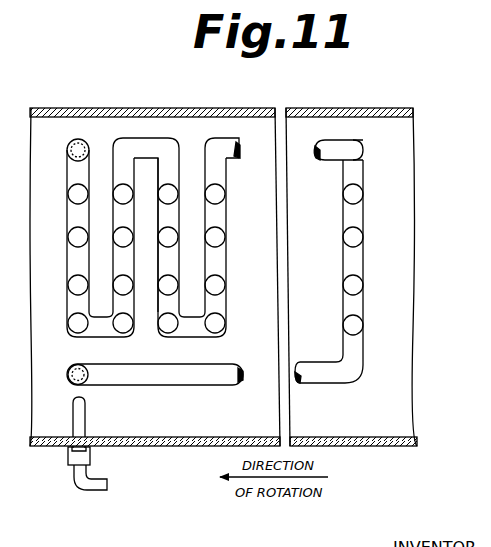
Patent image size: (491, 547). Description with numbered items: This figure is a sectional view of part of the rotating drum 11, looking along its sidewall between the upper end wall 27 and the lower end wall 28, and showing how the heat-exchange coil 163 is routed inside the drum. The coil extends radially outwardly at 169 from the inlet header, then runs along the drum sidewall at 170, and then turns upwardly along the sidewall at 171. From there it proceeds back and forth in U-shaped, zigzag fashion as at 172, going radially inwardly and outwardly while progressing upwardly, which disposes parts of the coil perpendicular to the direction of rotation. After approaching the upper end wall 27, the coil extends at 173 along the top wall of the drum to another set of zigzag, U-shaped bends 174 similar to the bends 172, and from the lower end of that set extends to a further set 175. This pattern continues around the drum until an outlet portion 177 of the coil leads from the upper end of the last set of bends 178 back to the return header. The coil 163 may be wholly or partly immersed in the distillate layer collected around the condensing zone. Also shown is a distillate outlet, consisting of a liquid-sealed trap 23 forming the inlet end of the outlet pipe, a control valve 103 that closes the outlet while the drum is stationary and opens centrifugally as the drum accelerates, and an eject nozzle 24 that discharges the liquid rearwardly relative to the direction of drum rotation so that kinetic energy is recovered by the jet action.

The drum 11 is at (399, 97).
The upper end wall 27 is at (313, 108).
The lower end wall 28 is at (240, 437).
The coil 163 is at (392, 251).
The upwardly extending coil portion 171 is at (363, 355).
The zigzag U-shaped bends 172 is at (358, 195).
The top wall coil portion 173 is at (326, 145).
The zigzag U-shaped bends 174 is at (222, 193).
The set of bends 175 is at (172, 236).
The outlet portion 177 is at (82, 139).
The last set of bends 178 is at (70, 237).
The radially outward coil portion 169 is at (80, 363).
The sidewall coil portion 170 is at (142, 380).
The liquid-sealed trap 23 is at (86, 421).
The control valve 103 is at (68, 460).
The eject nozzle 24 is at (76, 479).